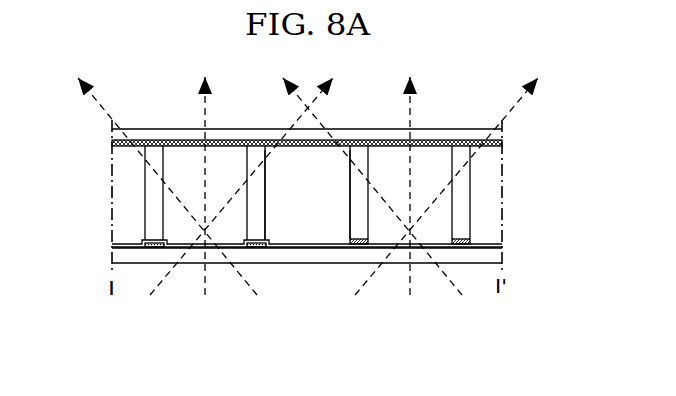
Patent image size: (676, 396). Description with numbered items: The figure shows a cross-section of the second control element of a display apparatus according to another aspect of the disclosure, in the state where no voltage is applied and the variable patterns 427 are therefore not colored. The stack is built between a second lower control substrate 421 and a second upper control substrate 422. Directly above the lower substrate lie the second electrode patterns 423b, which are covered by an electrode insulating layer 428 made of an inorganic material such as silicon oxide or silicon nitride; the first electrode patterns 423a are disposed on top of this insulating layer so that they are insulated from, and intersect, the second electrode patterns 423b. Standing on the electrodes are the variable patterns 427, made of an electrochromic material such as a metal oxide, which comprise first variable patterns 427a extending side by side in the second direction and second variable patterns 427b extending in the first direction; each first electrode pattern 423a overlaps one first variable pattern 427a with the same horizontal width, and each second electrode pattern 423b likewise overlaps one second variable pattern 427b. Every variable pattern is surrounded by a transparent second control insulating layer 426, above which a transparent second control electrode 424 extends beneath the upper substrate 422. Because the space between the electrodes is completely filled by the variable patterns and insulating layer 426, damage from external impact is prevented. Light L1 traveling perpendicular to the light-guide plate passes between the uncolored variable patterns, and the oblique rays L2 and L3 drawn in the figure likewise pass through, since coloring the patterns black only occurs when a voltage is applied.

The second lower control substrate 421 is at (485, 258).
The second upper control substrate 422 is at (495, 137).
The first electrode patterns 423a is at (470, 242).
The second electrode patterns 423b is at (145, 239).
The second control electrode 424 is at (112, 144).
The second control insulating layer 426 is at (485, 177).
The variable patterns 427 is at (311, 268).
The first variable patterns 427a is at (347, 206).
The second variable patterns 427b is at (268, 206).
The electrode insulating layer 428 is at (112, 246).
The light L1 is at (204, 110).
The second light path L2 is at (455, 287).
The third light path L3 is at (170, 273).